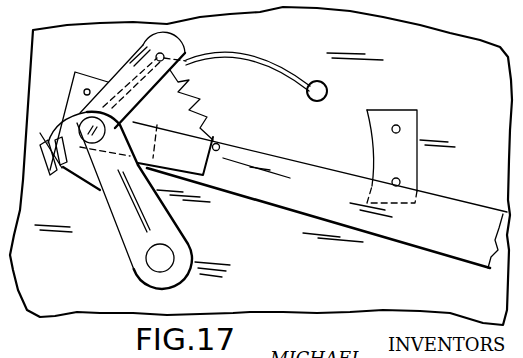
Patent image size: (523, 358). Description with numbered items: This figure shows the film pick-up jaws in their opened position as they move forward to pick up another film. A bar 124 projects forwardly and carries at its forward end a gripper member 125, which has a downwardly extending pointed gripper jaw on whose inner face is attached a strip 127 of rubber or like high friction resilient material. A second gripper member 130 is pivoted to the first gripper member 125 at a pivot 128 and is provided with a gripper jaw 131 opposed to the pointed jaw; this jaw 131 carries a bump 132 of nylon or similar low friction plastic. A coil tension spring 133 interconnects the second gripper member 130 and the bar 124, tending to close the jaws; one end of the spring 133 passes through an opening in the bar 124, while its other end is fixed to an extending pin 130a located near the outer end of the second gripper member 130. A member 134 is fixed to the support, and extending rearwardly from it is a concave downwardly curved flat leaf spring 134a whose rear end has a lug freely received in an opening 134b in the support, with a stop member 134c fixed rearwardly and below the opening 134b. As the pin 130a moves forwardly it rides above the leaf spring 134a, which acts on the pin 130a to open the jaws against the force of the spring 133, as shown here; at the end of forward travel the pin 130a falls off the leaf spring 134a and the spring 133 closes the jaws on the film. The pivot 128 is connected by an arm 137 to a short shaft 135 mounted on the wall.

The bar 124 is at (275, 200).
The gripper member 125 is at (137, 127).
The strip 127 is at (72, 127).
The pivot 128 is at (78, 115).
The second gripper member 130 is at (146, 53).
The extending pin 130a is at (156, 54).
The gripper jaw 131 is at (70, 172).
The bump 132 is at (50, 172).
The coil tension spring 133 is at (197, 83).
The member 134 is at (84, 91).
The leaf spring 134a is at (249, 56).
The opening 134b is at (328, 89).
The stop member 134c is at (416, 156).
The short shaft 135 is at (157, 265).
The arm 137 is at (130, 248).